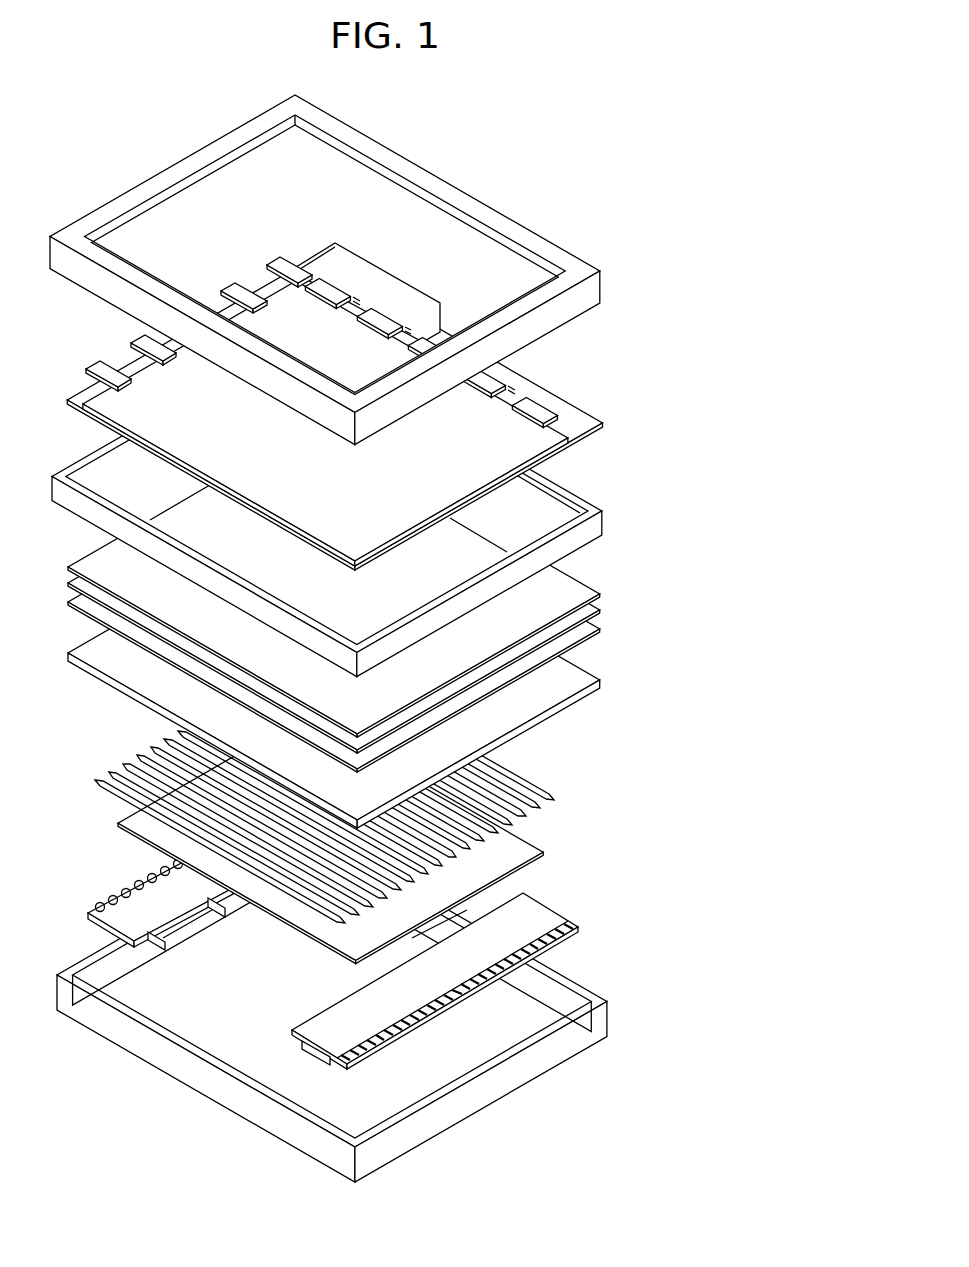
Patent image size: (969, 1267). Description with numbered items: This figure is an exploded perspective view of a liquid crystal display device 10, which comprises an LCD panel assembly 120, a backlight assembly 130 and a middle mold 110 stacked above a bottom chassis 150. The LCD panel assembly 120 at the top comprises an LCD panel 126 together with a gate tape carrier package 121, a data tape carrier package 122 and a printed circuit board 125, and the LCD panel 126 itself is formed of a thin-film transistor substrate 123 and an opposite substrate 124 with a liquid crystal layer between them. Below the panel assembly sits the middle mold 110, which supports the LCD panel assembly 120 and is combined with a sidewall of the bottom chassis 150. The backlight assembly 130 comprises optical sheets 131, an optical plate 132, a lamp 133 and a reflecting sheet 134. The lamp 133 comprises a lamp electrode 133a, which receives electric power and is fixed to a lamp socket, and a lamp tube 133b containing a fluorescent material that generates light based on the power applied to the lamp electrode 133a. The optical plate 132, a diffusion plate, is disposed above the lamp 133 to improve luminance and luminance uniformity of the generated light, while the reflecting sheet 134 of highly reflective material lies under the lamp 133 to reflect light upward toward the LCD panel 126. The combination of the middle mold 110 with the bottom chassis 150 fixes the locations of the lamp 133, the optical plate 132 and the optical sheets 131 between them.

The LCD device 10 is at (384, 635).
The middle mold 110 is at (602, 519).
The LCD panel assembly 120 is at (389, 387).
The gate tape carrier package 121 is at (103, 377).
The data tape carrier package 122 is at (327, 286).
The thin-film transistor substrate 123 is at (575, 430).
The opposite substrate 124 is at (570, 448).
The printed circuit board 125 is at (358, 267).
The LCD panel 126 is at (393, 413).
The backlight assembly 130 is at (392, 695).
The optical sheets 131 is at (353, 599).
The optical plate 132 is at (578, 682).
The lamp 133 is at (364, 790).
The lamp electrode 133a is at (557, 800).
The lamp tube 133b is at (540, 793).
The reflecting sheet 134 is at (541, 853).
The bottom chassis 150 is at (607, 1003).